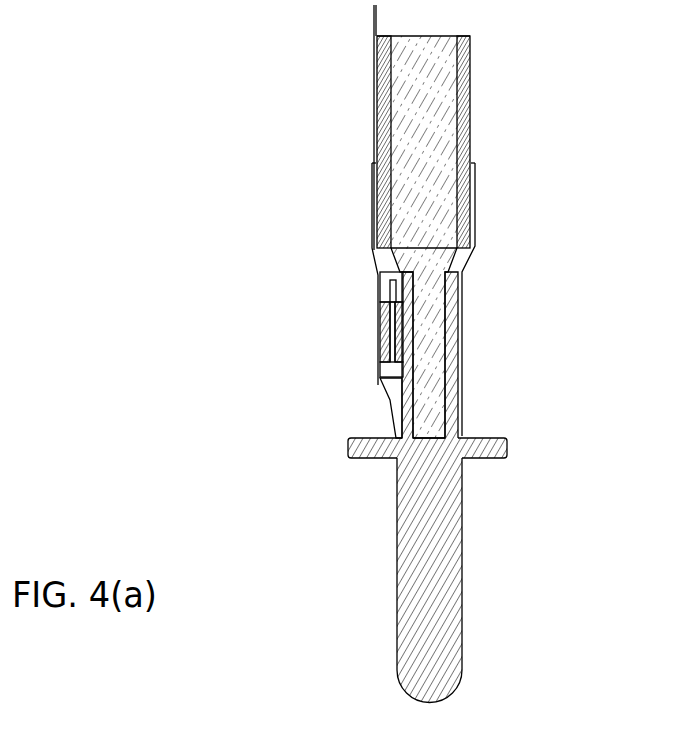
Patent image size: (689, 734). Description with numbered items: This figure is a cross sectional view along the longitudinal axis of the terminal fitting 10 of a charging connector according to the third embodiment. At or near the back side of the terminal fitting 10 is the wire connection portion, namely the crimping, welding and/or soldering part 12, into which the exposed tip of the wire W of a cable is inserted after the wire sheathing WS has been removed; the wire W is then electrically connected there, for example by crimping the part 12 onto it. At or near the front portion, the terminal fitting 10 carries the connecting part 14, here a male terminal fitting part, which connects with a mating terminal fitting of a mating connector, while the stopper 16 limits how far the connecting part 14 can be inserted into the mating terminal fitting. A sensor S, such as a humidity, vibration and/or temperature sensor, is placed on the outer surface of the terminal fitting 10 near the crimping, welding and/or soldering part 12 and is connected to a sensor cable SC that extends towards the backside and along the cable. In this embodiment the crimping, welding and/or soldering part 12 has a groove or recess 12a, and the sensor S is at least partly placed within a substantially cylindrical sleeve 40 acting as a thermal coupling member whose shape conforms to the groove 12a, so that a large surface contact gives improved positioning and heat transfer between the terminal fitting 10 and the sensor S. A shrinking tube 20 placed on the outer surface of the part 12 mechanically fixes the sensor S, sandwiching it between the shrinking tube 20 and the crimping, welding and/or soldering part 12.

The terminal fitting 10 is at (187, 293).
The sensor cable SC is at (372, 22).
The wire sheathing WS is at (470, 111).
The wire W is at (440, 174).
The shrinking tube 20 is at (462, 306).
The crimping, welding and/or soldering part 12 is at (455, 402).
The groove or recess 12a is at (392, 395).
The stopper 16 is at (503, 447).
The connecting part 14 is at (447, 582).
The sleeve 40 is at (383, 350).
The sensor S is at (392, 328).